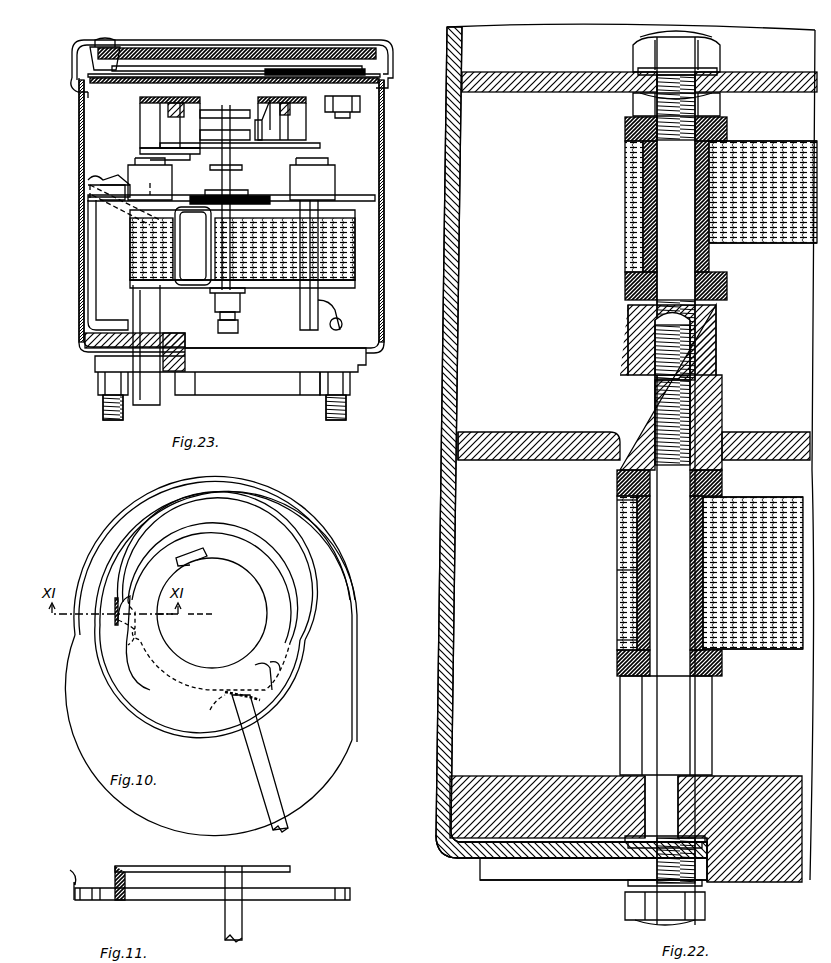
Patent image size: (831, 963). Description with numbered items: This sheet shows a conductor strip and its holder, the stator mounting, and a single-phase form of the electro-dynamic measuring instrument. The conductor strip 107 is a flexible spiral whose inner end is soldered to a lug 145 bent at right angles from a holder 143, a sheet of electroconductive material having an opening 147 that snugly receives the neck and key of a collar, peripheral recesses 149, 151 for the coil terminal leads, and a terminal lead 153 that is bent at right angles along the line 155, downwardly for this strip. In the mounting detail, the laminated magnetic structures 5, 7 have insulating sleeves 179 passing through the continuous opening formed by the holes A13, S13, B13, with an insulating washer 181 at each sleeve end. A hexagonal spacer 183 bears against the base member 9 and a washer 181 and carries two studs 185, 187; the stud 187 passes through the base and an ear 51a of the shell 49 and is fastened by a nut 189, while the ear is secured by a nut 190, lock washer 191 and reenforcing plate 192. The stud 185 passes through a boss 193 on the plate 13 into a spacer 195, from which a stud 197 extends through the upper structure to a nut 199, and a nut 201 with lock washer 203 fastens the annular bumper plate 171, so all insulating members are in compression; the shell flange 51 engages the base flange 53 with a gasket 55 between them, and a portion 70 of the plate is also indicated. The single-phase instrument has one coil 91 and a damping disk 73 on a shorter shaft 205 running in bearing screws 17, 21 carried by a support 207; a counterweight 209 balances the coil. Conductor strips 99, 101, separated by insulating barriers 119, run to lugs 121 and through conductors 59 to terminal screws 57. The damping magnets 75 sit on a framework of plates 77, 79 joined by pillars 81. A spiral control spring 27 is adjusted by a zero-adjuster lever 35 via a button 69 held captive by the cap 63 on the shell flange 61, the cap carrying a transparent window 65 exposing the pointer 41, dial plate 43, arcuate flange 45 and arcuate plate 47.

In FIG. 23, the magnetic structure 5 is at (130, 250).
In FIG. 22, the magnetic structure 5 is at (620, 208).
In FIG. 22, the magnetic structure 7 is at (617, 590).
In FIG. 22, the base member 9 is at (775, 790).
In FIG. 23, the supporting plate 13 is at (347, 198).
In FIG. 22, the supporting plate 13 is at (765, 432).
In FIG. 23, the bearing screw 17 is at (238, 328).
In FIG. 23, the bearing screw 21 is at (140, 101).
In FIG. 23, the spiral control spring 27 is at (170, 115).
In FIG. 23, the zero-adjuster lever 35 is at (84, 92).
In FIG. 23, the pointer 41 is at (305, 65).
In FIG. 23, the dial plate 43 is at (380, 80).
In FIG. 23, the arcuate flange 45 is at (380, 72).
In FIG. 23, the arcuate plate 47 is at (340, 68).
In FIG. 22, the cylindrical shell 49 is at (440, 480).
In FIG. 23, the inwardly turned flange 51 is at (375, 362).
In FIG. 22, the inwardly turned flange 51 is at (460, 860).
In FIG. 22, the ear 51a is at (530, 862).
In FIG. 23, the flange 53 is at (345, 335).
In FIG. 22, the gasket 55 is at (520, 860).
In FIG. 23, the terminal screw 57 is at (103, 410).
In FIG. 23, the conductor 59 is at (92, 315).
In FIG. 23, the outwardly extending flange 61 is at (385, 78).
In FIG. 23, the cap 63 is at (88, 58).
In FIG. 23, the transparent window 65 is at (225, 48).
In FIG. 23, the zero-adjuster button 69 is at (103, 40).
In FIG. 22, the plate edge 70 is at (458, 430).
In FIG. 23, the damping disk 73 is at (296, 135).
In FIG. 23, the permanent magnet 75 is at (238, 150).
In FIG. 23, the base plate 77 is at (345, 115).
In FIG. 23, the plate 79 is at (322, 147).
In FIG. 23, the pillar 81 is at (135, 153).
In FIG. 23, the coil 91 is at (178, 290).
In FIG. 23, the conductor strip 99 is at (245, 205).
In FIG. 23, the conductor strip 101 is at (275, 190).
In FIG. 10, the conductor strip 107 is at (360, 650).
In FIG. 11, the conductor strip 107 is at (63, 878).
In FIG. 23, the insulating barrier 119 is at (212, 185).
In FIG. 23, the lug 121 is at (98, 170).
In FIG. 10, the holder 143 is at (172, 637).
In FIG. 11, the holder 143 is at (185, 868).
In FIG. 10, the lug 145 is at (130, 638).
In FIG. 11, the lug 145 is at (127, 880).
In FIG. 10, the opening 147 is at (267, 601).
In FIG. 10, the peripheral recess 149 is at (165, 672).
In FIG. 10, the peripheral recess 151 is at (262, 672).
In FIG. 10, the terminal lead 153 is at (275, 760).
In FIG. 11, the terminal lead 153 is at (225, 920).
In FIG. 10, the line 155 is at (215, 700).
In FIG. 22, the bumper plate 171 is at (772, 85).
In FIG. 22, the insulating sleeve 179 is at (625, 258).
In FIG. 22, the insulating washer 181 is at (625, 125).
In FIG. 23, the spacer 183 is at (162, 330).
In FIG. 22, the spacer 183 is at (620, 708).
In FIG. 22, the stud 185 is at (655, 378).
In FIG. 22, the stud 187 is at (700, 790).
In FIG. 22, the nut 189 is at (705, 785).
In FIG. 22, the nut 190 is at (625, 912).
In FIG. 22, the lock washer 191 is at (628, 885).
In FIG. 22, the reenforcing plate 192 is at (552, 872).
In FIG. 22, the boss 193 is at (726, 388).
In FIG. 22, the spacer 195 is at (720, 330).
In FIG. 22, the stud 197 is at (625, 190).
In FIG. 22, the nut 199 is at (633, 106).
In FIG. 22, the nut 201 is at (633, 45).
In FIG. 22, the lock washer 203 is at (638, 70).
In FIG. 23, the shaft 205 is at (243, 290).
In FIG. 23, the support 207 is at (238, 316).
In FIG. 23, the counterweight 209 is at (272, 185).
In FIG. 22, the opening A13 is at (617, 512).
In FIG. 22, the opening S13 is at (617, 570).
In FIG. 22, the opening B13 is at (617, 624).